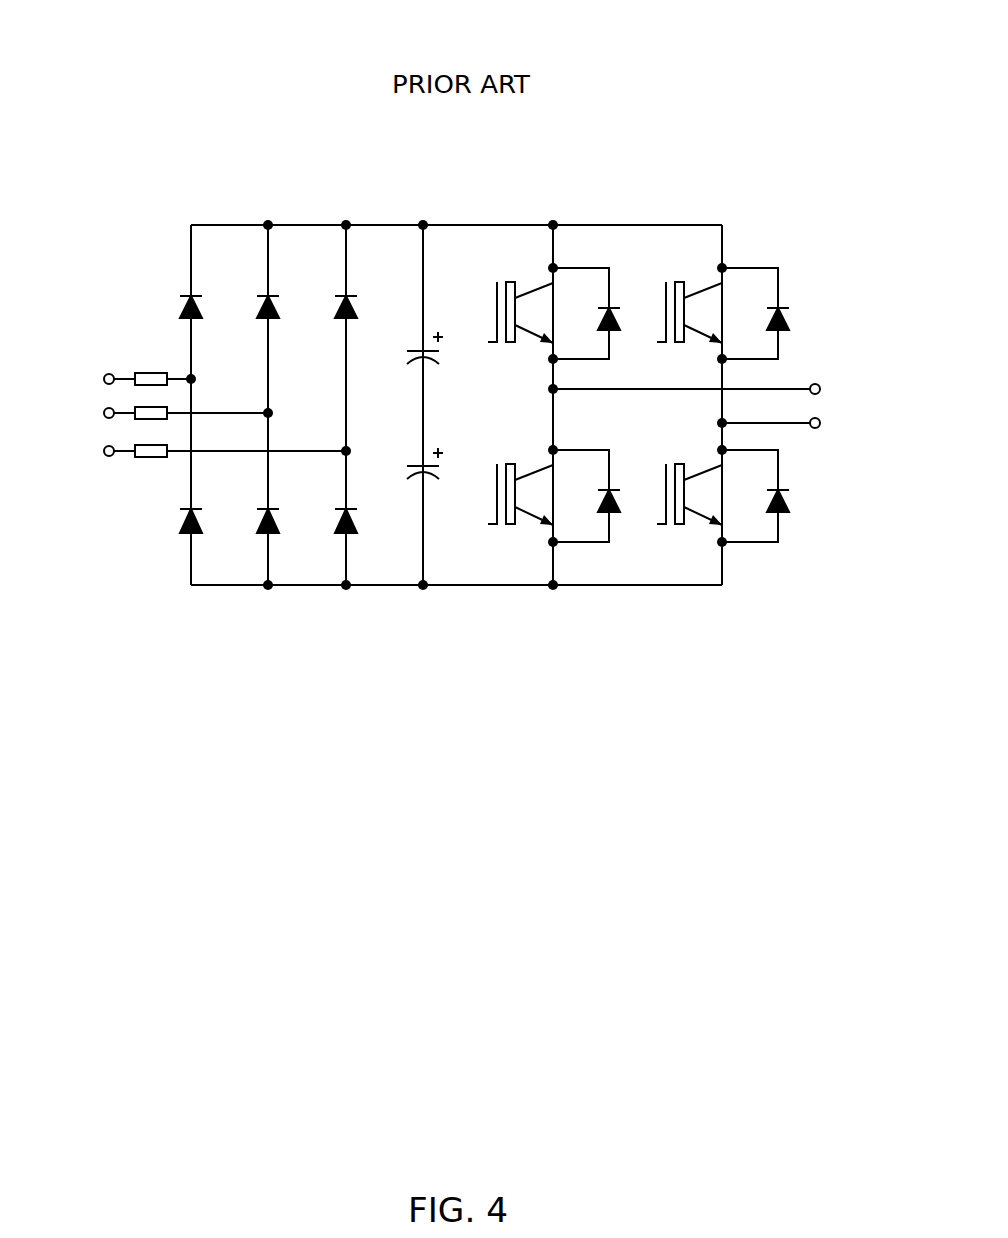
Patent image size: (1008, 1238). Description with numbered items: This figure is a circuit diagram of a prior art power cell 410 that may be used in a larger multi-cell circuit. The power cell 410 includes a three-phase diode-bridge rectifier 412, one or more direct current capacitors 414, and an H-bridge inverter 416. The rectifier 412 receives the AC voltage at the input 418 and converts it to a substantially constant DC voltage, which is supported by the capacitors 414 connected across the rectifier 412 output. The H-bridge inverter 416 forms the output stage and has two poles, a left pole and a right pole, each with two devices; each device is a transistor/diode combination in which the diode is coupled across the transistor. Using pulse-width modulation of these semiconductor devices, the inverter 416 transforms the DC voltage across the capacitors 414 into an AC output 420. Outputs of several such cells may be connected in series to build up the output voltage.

The power cell 410 is at (186, 140).
The three-phase diode-bridge rectifier 412 is at (357, 655).
The direct current (DC) capacitors 414 is at (478, 655).
The H-bridge inverter 416 is at (795, 655).
The input 418 is at (105, 352).
The AC output 420 is at (847, 358).